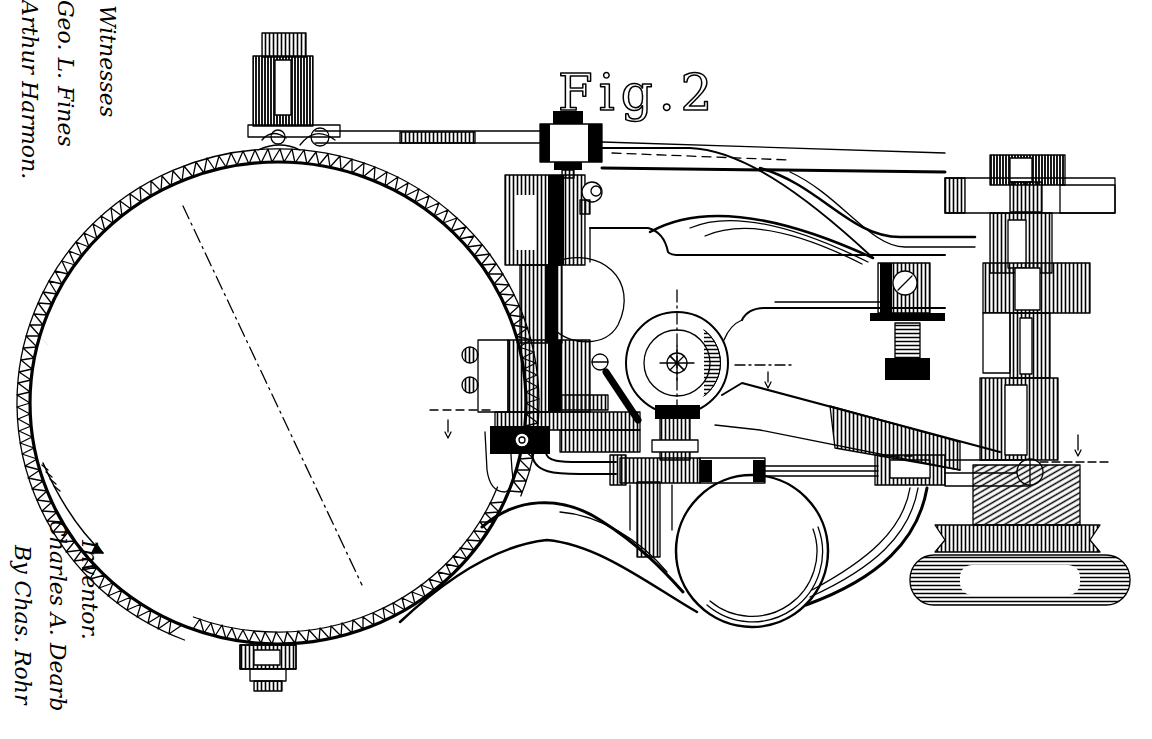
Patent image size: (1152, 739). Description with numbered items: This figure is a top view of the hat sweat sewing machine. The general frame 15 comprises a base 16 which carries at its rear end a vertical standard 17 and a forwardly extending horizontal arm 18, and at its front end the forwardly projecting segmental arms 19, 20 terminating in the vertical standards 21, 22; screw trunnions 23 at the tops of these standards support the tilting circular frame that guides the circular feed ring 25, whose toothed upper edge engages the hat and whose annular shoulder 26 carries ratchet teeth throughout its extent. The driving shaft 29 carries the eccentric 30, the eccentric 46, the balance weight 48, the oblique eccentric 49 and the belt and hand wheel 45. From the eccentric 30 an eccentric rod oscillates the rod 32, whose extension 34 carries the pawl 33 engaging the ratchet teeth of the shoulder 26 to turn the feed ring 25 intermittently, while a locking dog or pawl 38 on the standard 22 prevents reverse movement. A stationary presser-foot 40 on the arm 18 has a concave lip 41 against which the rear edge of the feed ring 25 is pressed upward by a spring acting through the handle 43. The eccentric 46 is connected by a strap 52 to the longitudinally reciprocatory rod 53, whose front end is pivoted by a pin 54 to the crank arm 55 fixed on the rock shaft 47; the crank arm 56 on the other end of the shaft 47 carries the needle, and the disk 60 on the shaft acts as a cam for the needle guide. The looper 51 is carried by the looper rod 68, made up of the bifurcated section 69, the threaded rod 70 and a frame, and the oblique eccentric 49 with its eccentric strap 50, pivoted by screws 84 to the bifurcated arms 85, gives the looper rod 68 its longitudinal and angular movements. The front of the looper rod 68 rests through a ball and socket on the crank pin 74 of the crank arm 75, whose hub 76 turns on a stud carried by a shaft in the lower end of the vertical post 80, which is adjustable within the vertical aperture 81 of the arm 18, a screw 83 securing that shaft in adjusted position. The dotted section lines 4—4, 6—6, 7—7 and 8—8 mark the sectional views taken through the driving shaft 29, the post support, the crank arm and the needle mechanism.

The section line 4— 4 is at (999, 452).
The section line 6— 6 is at (677, 380).
The section line 7— 7 is at (704, 436).
The section line 8— 8 is at (533, 405).
The general frame 15 is at (176, 190).
The base 16 is at (761, 240).
The vertical standard 17 is at (900, 432).
The horizontal arm 18 is at (750, 304).
The segmental arm 19 is at (452, 586).
The segmental arm 20 is at (412, 184).
The vertical standard 21 is at (296, 658).
The vertical standard 22 is at (268, 133).
The screw trunnions 23 is at (312, 100).
The circular feed ring 25 is at (40, 318).
The annular projecting shoulder 26 is at (178, 635).
The driving shaft 29 is at (1038, 345).
The eccentric 30 is at (1062, 232).
The rod 32 is at (852, 222).
The pawl 33 is at (322, 130).
The extension 34 is at (470, 141).
The locking dog 38 is at (262, 148).
The stationary presser-foot 40 is at (476, 364).
The concave lower end or lip 41 is at (498, 448).
The handle 43 is at (752, 551).
The belt and hand wheel 45 is at (1095, 572).
The eccentric 46 is at (1058, 158).
The rock shaft 47 is at (520, 292).
The balance weight 48 is at (1096, 205).
The oblique eccentric 49 is at (1062, 480).
The eccentric strap 50 is at (1085, 500).
The looper 51 is at (592, 470).
The strap 52 is at (1080, 182).
The longitudinally reciprocatory rod 53 is at (858, 163).
The pin 54 is at (566, 131).
The crank arm 55 is at (508, 185).
The crank arm 56 is at (572, 436).
The disk 60 is at (476, 397).
The looper rod 68 is at (760, 476).
The bifurcated section 69 is at (905, 486).
The threaded rod 70 is at (803, 468).
The crank pin 74 is at (700, 460).
The crank arm 75 is at (690, 448).
The hub 76 is at (690, 430).
The vertical post 80 is at (683, 346).
The vertical aperture 81 is at (728, 344).
The screw 83 is at (672, 352).
The screws 84 is at (1044, 470).
The bifurcated arms 85 is at (975, 486).